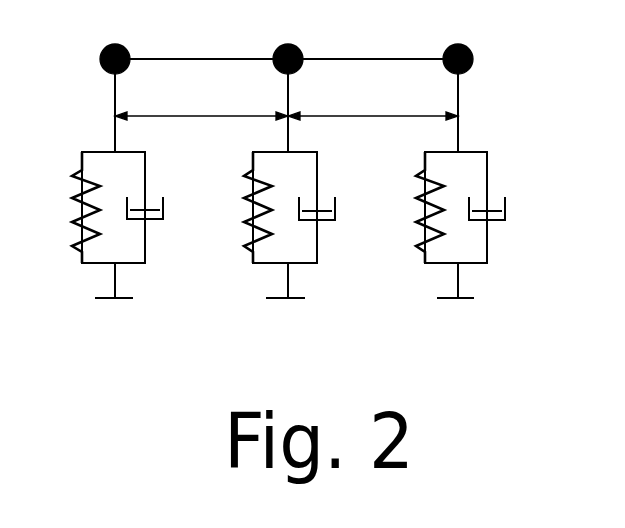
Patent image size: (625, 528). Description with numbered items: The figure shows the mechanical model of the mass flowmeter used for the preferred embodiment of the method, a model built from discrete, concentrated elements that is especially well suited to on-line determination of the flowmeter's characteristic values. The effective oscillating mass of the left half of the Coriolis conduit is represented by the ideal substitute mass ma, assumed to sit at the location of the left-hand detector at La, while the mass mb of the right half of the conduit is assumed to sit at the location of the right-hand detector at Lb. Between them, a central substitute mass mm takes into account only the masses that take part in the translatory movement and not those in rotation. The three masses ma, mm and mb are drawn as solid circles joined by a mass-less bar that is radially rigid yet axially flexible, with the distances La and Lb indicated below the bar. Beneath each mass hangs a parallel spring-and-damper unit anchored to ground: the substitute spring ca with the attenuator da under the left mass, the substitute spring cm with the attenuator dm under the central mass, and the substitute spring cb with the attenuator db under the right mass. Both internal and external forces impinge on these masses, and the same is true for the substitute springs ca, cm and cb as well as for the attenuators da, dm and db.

The ideal substitute mass ma is at (90, 56).
The central substitute mass mm is at (316, 46).
The mass mb is at (490, 62).
The location of the left-hand detector La is at (201, 101).
The location of the right-hand detector Lb is at (373, 101).
The substitute spring ca is at (68, 207).
The attenuator da is at (165, 207).
The substitute spring cm is at (243, 207).
The attenuator dm is at (339, 207).
The substitute spring cb is at (416, 207).
The attenuator db is at (505, 207).